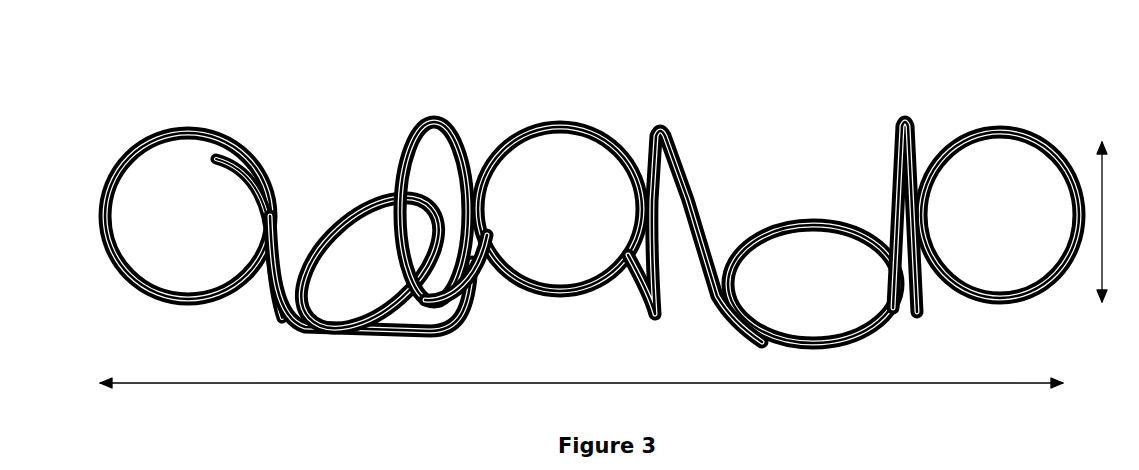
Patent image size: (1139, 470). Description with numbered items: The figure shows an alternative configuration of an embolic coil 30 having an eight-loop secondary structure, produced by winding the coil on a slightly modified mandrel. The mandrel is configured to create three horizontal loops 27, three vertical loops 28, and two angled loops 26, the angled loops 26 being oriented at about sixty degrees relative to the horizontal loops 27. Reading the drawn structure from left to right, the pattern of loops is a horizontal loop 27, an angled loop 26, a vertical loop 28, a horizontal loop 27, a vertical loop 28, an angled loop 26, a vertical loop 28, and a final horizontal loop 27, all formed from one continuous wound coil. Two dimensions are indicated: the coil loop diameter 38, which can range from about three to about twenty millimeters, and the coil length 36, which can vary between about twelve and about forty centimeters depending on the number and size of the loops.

The angled loop 26 is at (329, 222).
The horizontal loop 27 is at (169, 130).
The vertical loop 28 is at (410, 131).
The embolic coil 30 is at (592, 212).
The coil length 36 is at (1001, 384).
The coil loop diameter 38 is at (1100, 165).